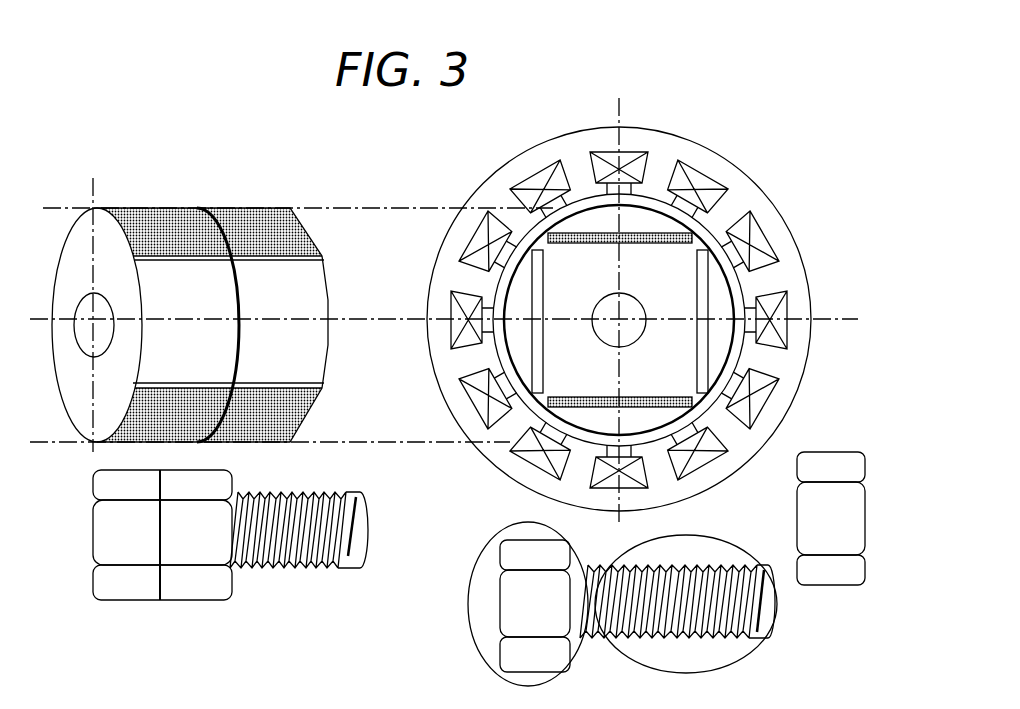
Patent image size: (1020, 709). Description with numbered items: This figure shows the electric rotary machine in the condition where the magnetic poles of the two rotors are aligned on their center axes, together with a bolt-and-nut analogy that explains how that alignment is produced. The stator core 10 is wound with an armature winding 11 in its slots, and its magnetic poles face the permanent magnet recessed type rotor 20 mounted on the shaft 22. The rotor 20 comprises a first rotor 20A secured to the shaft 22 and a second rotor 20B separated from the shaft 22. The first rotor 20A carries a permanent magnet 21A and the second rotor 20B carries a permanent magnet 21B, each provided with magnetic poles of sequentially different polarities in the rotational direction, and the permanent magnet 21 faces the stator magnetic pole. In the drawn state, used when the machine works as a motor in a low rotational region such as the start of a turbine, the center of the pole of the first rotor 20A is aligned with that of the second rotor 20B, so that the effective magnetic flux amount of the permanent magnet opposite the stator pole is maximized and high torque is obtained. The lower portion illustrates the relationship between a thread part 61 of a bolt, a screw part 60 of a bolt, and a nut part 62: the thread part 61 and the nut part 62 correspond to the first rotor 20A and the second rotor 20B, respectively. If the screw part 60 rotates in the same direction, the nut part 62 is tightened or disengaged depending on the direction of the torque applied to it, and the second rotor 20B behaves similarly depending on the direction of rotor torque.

The stator core 10 is at (648, 126).
The armature winding 11 is at (697, 182).
The permanent magnet recessed type rotor 20 is at (706, 216).
The first rotor 20A is at (121, 217).
The second rotor 20B is at (312, 217).
The permanent magnet 21 is at (710, 262).
The permanent magnet of first rotor 21A is at (186, 275).
The permanent magnet of second rotor 21B is at (244, 275).
The shaft 22 is at (600, 296).
The screw part of a bolt 60 is at (357, 543).
The thread part of a bolt 61 is at (105, 540).
The nut part 62 is at (852, 452).